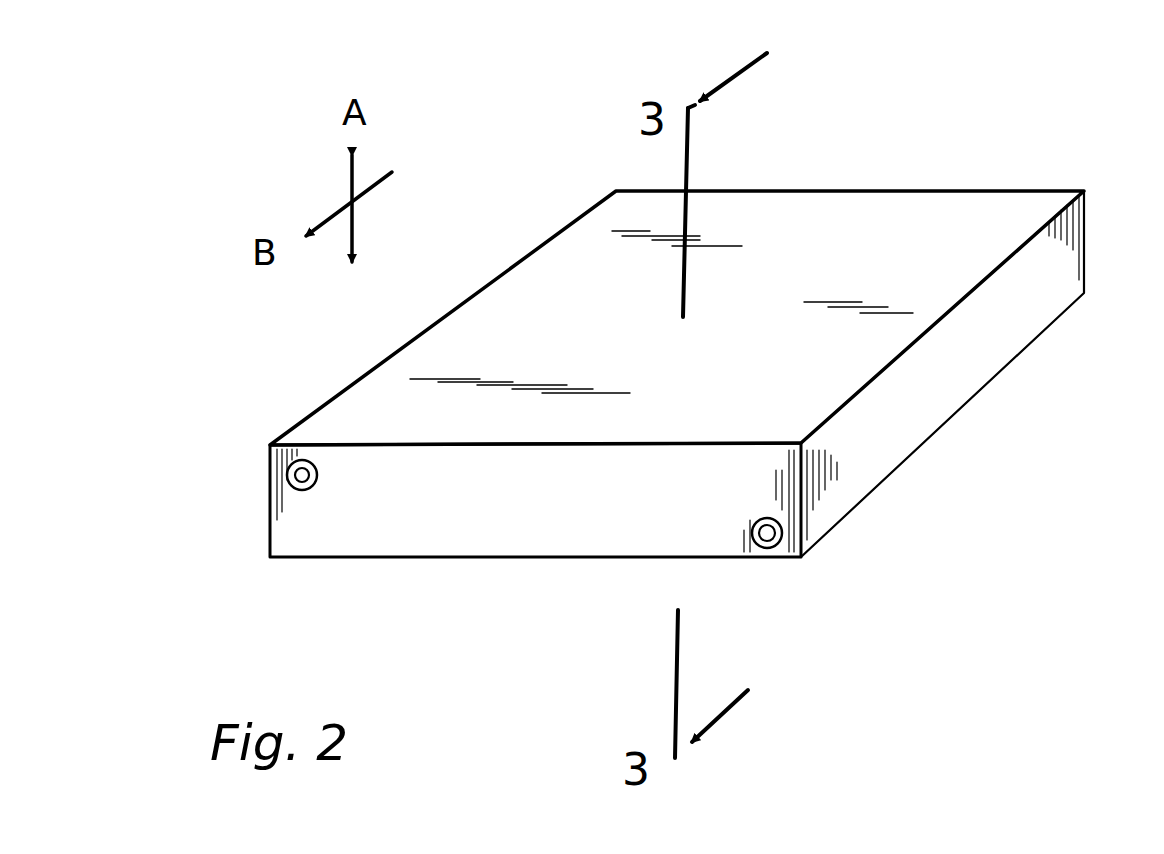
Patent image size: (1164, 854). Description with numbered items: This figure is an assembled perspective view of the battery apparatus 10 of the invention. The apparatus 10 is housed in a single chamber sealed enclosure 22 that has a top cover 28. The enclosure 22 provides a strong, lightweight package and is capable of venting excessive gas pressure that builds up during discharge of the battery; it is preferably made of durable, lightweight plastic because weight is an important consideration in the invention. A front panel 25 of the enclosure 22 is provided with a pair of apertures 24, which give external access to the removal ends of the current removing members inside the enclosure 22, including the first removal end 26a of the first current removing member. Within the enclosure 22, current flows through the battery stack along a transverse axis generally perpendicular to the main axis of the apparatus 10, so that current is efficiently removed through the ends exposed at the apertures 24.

The apparatus 10 is at (652, 377).
The enclosure 22 is at (1010, 335).
The apertures 24 is at (287, 465).
The front panel 25 is at (403, 530).
The first removal end 26a is at (296, 487).
The top cover 28 is at (887, 210).